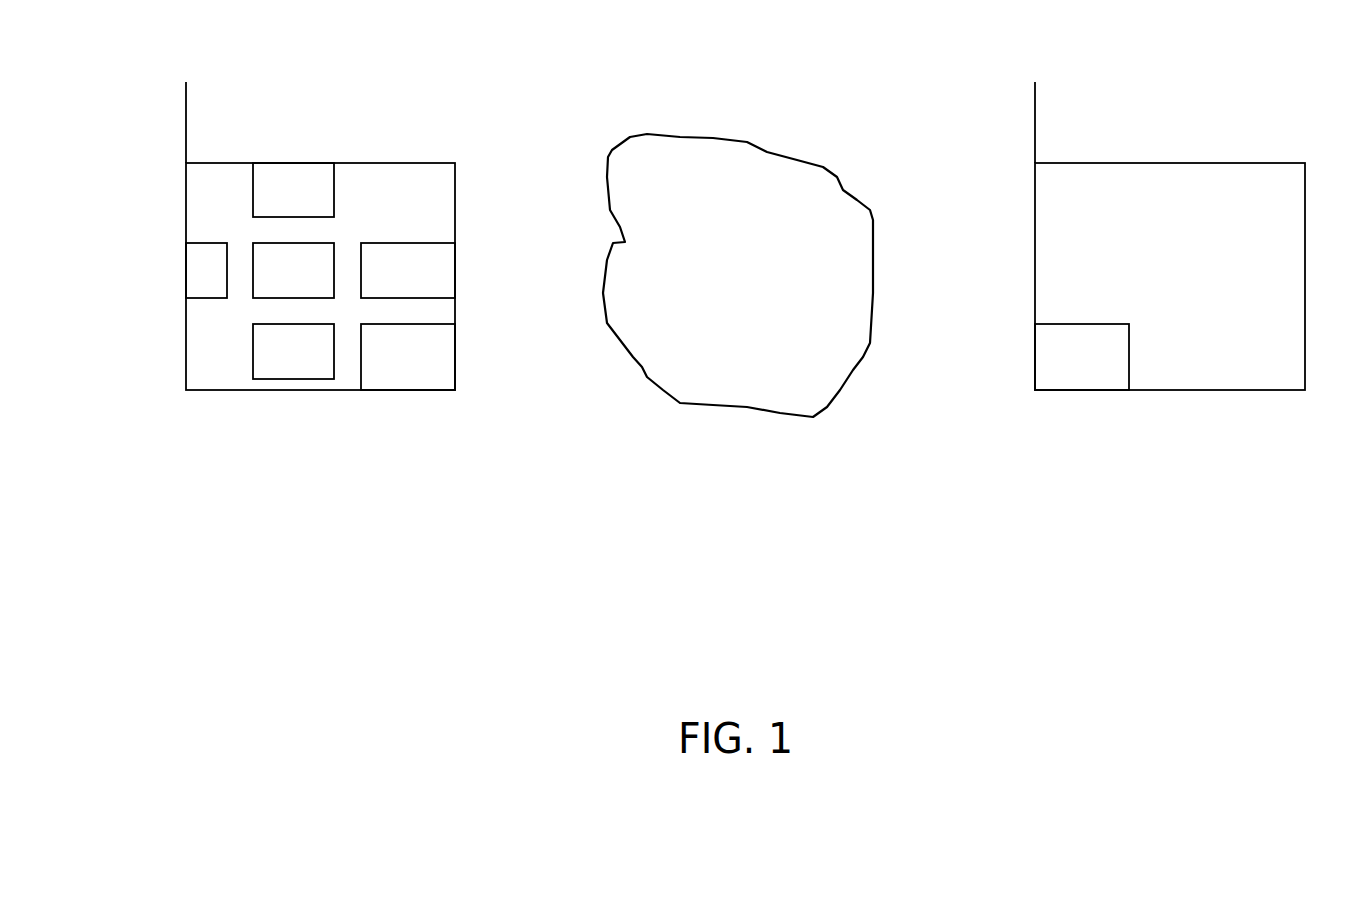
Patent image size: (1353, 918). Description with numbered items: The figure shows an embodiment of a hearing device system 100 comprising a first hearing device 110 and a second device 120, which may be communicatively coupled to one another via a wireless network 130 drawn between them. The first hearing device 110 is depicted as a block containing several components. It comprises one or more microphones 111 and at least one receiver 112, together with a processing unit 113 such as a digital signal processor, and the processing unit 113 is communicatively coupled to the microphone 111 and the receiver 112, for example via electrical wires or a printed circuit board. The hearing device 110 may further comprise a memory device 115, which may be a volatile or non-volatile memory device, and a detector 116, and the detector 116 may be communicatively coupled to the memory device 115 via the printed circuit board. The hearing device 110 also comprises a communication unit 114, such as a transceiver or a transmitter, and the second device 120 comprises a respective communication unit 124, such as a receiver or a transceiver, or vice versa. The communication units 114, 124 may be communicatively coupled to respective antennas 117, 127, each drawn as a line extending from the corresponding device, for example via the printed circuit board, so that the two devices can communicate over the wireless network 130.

The hearing device system 100 is at (754, 514).
The first hearing device 110 is at (320, 303).
The microphone 111 is at (307, 192).
The receiver 112 is at (408, 270).
The processing unit 113 is at (293, 270).
The communication unit 114 is at (408, 357).
The memory device 115 is at (293, 351).
The detector 116 is at (198, 272).
The antenna 117 is at (209, 108).
The second device 120 is at (1170, 303).
The communication unit 124 is at (1082, 357).
The antenna 127 is at (1053, 108).
The wireless network 130 is at (738, 275).